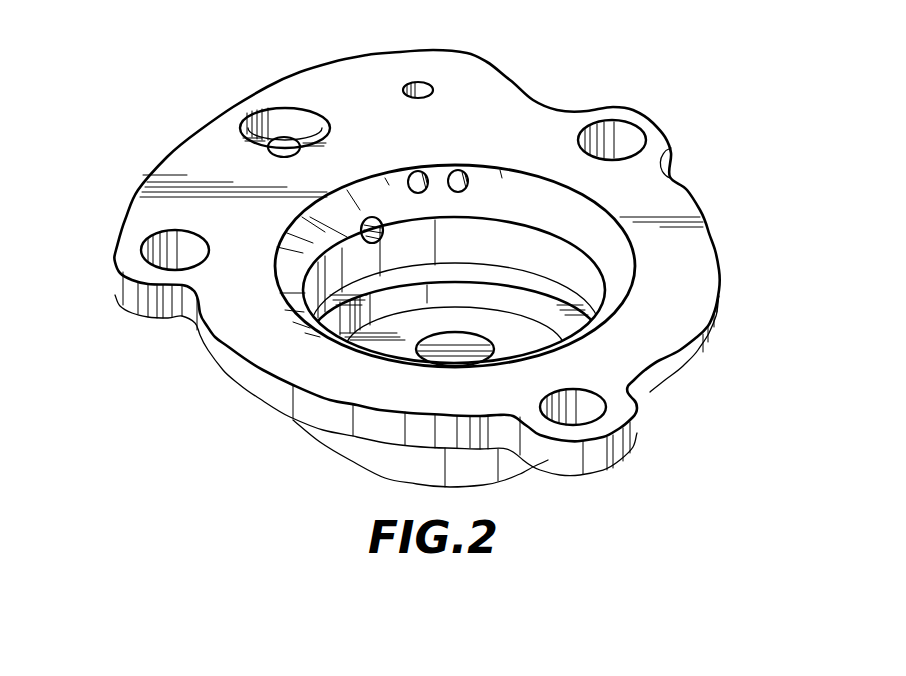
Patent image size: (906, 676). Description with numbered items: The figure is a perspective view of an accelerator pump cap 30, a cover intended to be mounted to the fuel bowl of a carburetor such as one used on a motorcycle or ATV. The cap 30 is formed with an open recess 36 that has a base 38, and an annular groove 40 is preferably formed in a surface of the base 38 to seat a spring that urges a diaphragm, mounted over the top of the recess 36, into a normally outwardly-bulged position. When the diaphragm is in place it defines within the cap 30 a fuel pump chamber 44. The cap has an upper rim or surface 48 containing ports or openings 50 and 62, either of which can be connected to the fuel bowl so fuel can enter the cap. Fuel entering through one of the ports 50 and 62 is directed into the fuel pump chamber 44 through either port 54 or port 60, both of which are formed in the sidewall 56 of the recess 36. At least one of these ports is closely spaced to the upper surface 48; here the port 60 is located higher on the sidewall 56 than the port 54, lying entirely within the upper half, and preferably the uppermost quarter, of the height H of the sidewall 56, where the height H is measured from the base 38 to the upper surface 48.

The accelerator pump cap 30 is at (150, 172).
The open recess 36 is at (541, 357).
The base 38 is at (443, 362).
The annular groove 40 is at (400, 343).
The fuel pump chamber 44 is at (577, 294).
The upper rim or surface 48 is at (500, 83).
The port or opening 50 is at (286, 136).
The port 54 is at (382, 222).
The sidewall 56 is at (590, 220).
The port 60 is at (420, 172).
The port or opening 62 is at (428, 84).
The height of the sidewall H is at (487, 333).